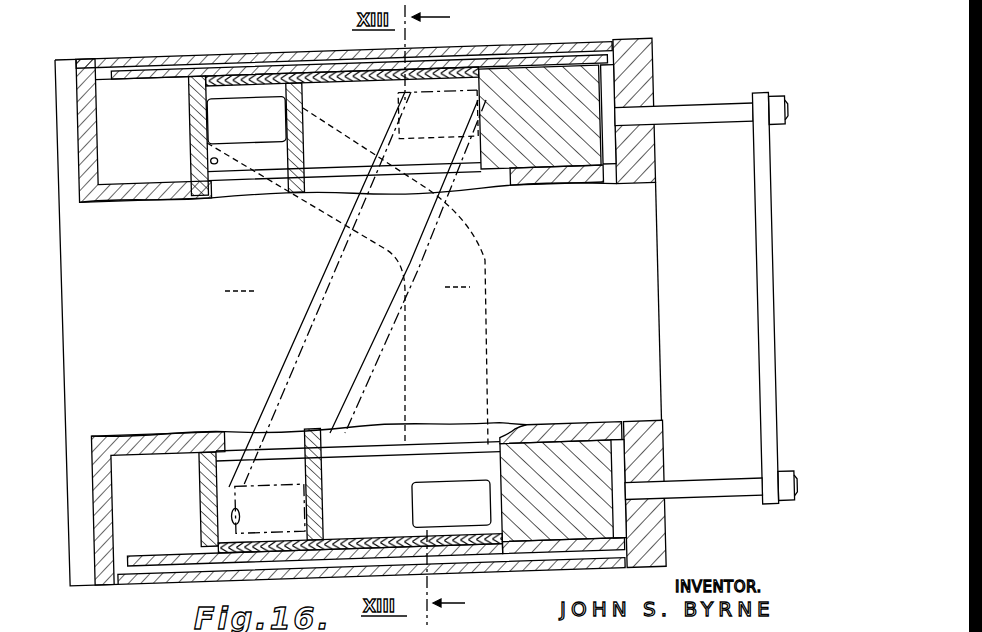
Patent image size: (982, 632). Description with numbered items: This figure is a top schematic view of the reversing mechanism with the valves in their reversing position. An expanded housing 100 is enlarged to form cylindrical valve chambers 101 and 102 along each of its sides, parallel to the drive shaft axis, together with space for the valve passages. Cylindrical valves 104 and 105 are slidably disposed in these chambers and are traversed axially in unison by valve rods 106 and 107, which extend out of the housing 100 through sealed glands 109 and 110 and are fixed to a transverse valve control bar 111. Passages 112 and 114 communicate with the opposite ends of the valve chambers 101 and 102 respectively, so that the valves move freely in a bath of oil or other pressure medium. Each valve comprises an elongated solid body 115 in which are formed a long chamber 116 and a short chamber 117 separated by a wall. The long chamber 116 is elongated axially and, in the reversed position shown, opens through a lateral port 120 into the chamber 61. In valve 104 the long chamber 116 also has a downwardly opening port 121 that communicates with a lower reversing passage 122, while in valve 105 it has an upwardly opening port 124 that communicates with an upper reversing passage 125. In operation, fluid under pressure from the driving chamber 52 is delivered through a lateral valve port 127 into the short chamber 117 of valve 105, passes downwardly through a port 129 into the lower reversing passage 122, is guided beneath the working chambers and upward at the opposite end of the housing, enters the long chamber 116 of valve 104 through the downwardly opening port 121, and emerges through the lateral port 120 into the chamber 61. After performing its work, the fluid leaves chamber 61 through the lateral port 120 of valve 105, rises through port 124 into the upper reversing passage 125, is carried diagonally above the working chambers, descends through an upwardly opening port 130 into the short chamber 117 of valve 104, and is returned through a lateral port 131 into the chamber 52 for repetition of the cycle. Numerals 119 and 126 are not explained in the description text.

The driving chamber 52 is at (240, 281).
The chamber 61 is at (457, 277).
The expanded housing 100 is at (79, 589).
The cylindrical valve chamber 101 is at (184, 551).
The cylindrical valve chamber 102 is at (121, 86).
The cylindrical valve 104 is at (624, 421).
The cylindrical valve 105 is at (607, 170).
The valve rod 106 is at (710, 492).
The valve rod 107 is at (691, 124).
The sealed gland 109 is at (662, 506).
The sealed gland 110 is at (653, 157).
The transverse valve control bar 111 is at (759, 275).
The passage 112 is at (203, 574).
The passage 114 is at (238, 60).
The elongated solid body 115 is at (552, 542).
The long chamber 116 is at (341, 546).
The short chamber 117 is at (208, 162).
The lower chamber plate 119 is at (317, 511).
The lateral port 120 is at (480, 178).
The downwardly opening port 121 is at (411, 498).
The lower reversing passage 122 is at (489, 347).
The upwardly opening port 124 is at (399, 118).
The upper reversing passage 125 is at (336, 266).
The partition wall 126 is at (290, 197).
The lateral valve port 127 is at (222, 184).
The port 129 is at (270, 129).
The upwardly opening port 130 is at (249, 490).
The lateral port 131 is at (240, 434).